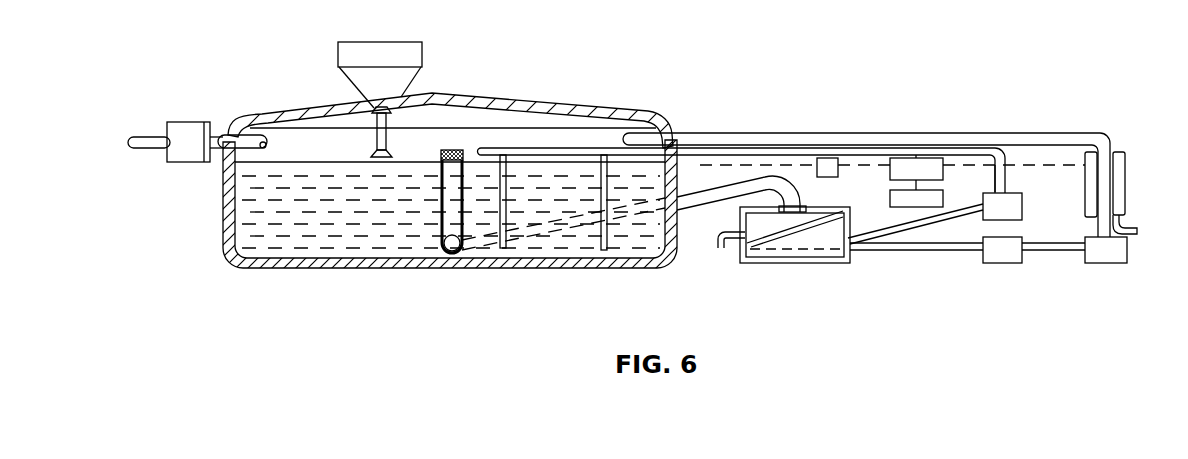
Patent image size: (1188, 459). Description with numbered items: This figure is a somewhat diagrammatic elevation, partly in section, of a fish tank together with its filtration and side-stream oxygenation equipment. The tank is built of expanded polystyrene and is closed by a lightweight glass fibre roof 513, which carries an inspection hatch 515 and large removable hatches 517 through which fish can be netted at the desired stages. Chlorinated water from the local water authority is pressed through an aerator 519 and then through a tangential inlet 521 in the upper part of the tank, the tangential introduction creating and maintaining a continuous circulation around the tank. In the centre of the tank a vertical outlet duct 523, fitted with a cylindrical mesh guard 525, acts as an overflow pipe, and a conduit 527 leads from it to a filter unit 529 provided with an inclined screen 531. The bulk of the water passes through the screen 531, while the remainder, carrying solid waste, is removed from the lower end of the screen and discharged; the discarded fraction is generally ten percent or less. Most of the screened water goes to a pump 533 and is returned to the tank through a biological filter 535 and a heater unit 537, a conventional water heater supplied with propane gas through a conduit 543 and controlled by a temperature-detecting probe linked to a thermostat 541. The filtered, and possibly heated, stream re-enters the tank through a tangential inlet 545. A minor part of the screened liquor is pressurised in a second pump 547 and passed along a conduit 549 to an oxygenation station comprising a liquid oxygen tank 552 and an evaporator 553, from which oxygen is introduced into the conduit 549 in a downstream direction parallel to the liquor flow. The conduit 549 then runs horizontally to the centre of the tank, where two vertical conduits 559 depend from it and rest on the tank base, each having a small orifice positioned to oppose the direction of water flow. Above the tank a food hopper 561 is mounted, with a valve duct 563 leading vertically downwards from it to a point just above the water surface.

The glass fibre roof 513 is at (581, 106).
The inspection hatch 515 is at (455, 96).
The removable hatches 517 is at (300, 113).
The aerator 519 is at (190, 146).
The tangential inlet 521 is at (146, 150).
The vertical outlet duct 523 is at (452, 215).
The cylindrical mesh guard 525 is at (443, 154).
The conduit 527 is at (694, 205).
The filter unit 529 is at (785, 262).
The inclined screen 531 is at (815, 225).
The pump 533 is at (1003, 255).
The biological filter 535 is at (1110, 255).
The heater unit 537 is at (1114, 190).
The thermostat 541 is at (830, 168).
The conduit 543 is at (1134, 227).
The tangential inlet 545 is at (745, 134).
The pump 547 is at (1006, 207).
The conduit 549 is at (1006, 180).
The liquid oxygen tank 552 is at (910, 198).
The evaporator 553 is at (928, 172).
The vertical conduits 559 is at (600, 250).
The food hopper 561 is at (372, 53).
The valve duct 563 is at (376, 150).